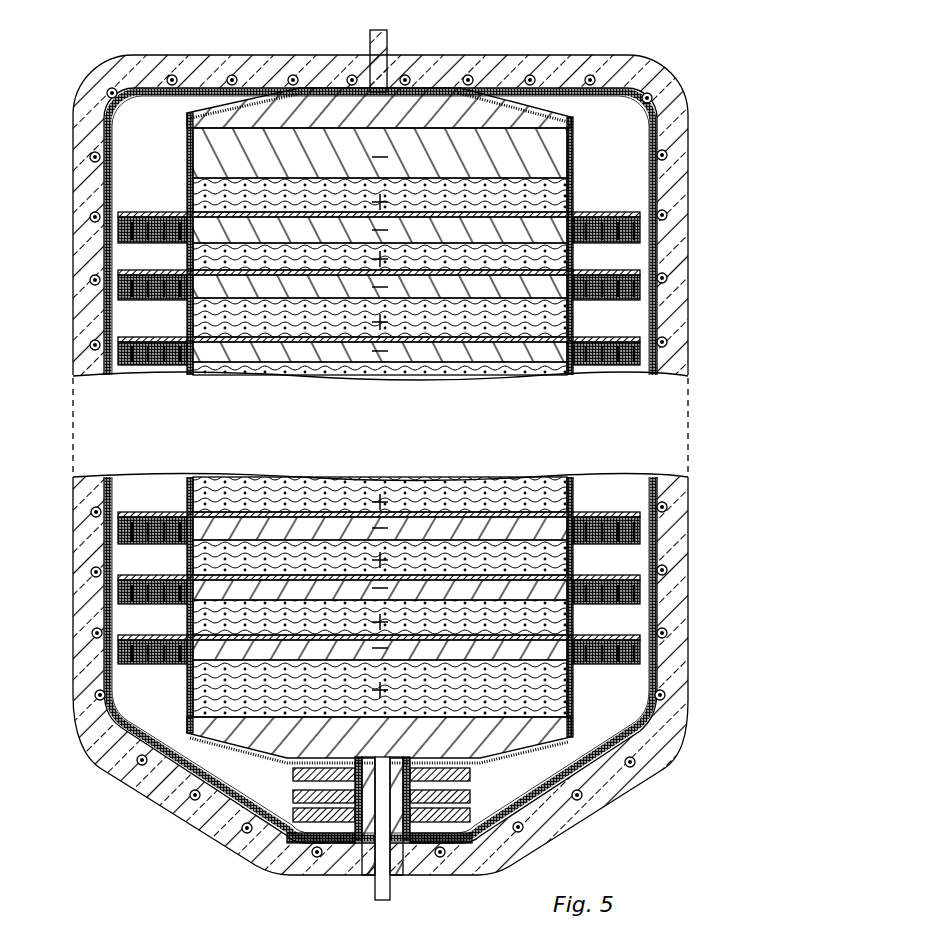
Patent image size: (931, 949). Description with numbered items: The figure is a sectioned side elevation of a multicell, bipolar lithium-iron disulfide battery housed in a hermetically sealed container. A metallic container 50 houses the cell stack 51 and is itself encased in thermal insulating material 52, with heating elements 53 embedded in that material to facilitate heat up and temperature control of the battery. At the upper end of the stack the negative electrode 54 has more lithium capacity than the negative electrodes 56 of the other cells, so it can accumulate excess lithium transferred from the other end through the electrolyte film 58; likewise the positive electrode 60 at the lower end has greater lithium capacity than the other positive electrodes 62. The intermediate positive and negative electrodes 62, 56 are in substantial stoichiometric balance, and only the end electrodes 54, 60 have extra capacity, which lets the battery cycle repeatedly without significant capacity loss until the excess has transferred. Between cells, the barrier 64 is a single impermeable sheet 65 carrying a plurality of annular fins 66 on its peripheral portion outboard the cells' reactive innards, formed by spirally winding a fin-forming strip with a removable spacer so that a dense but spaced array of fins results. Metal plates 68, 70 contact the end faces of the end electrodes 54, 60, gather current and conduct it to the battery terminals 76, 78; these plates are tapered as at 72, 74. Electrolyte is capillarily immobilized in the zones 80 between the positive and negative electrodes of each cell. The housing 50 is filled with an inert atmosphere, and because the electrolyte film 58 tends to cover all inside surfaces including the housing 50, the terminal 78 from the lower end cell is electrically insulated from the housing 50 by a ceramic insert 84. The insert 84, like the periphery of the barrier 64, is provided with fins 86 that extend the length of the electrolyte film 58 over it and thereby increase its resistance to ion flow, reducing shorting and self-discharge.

The container 50 is at (660, 140).
The thermal insulating material 52 is at (673, 168).
The heating elements 53 is at (662, 219).
The negative electrode 54 is at (220, 142).
The negative electrodes 56 is at (220, 202).
The electrolyte film 58 is at (183, 157).
The positive electrode 60 is at (572, 695).
The positive electrodes 62 is at (187, 177).
The barrier 64 is at (590, 206).
The sheet 65 is at (210, 573).
The annular fins 66 is at (607, 370).
The metal plate 68 is at (445, 105).
The metal plate 70 is at (513, 733).
The taper 72 is at (540, 100).
The taper 74 is at (207, 743).
The battery terminal 76 is at (388, 38).
The battery terminal 78 is at (380, 888).
The zones 80 is at (582, 183).
The ceramic insert 84 is at (390, 873).
The fins 86 is at (293, 777).
The cell stack 51 is at (590, 180).